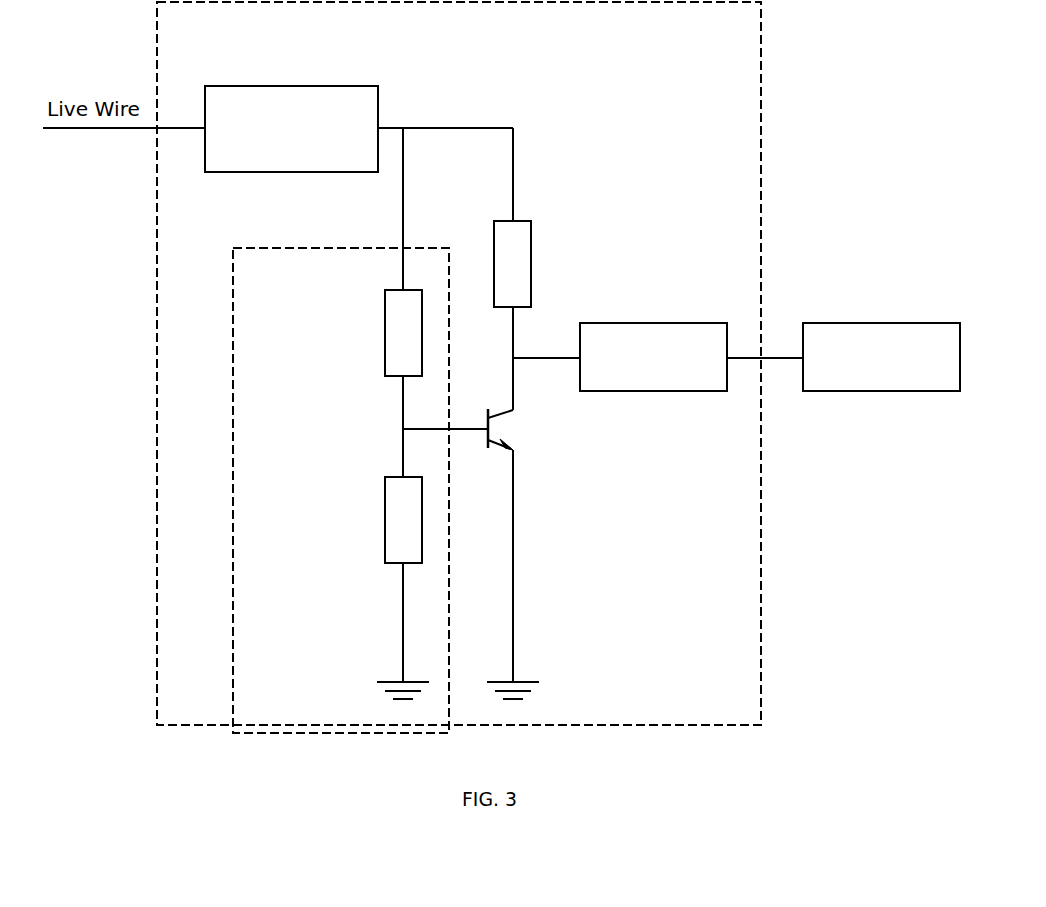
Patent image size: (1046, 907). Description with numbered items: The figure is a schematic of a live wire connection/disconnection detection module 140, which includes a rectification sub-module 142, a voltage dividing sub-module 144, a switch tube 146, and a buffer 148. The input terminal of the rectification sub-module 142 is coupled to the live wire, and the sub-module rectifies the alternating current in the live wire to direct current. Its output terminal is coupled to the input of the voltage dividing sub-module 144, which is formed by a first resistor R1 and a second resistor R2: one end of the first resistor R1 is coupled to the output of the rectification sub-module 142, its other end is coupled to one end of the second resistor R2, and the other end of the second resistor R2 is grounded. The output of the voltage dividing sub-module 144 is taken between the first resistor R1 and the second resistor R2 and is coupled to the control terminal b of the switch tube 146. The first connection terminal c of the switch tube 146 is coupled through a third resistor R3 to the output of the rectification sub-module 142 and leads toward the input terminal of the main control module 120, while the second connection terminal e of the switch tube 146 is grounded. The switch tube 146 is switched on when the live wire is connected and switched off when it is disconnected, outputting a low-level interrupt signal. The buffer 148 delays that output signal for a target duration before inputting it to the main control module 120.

The live wire connection/disconnection detection module 140 is at (733, 48).
The rectification sub-module 142 is at (291, 129).
The voltage dividing sub-module 144 is at (341, 490).
The switch tube 146 is at (503, 541).
The buffer 148 is at (653, 357).
The main control module 120 is at (881, 357).
The first resistor R1 is at (388, 333).
The second resistor R2 is at (387, 520).
The third resistor R3 is at (527, 264).